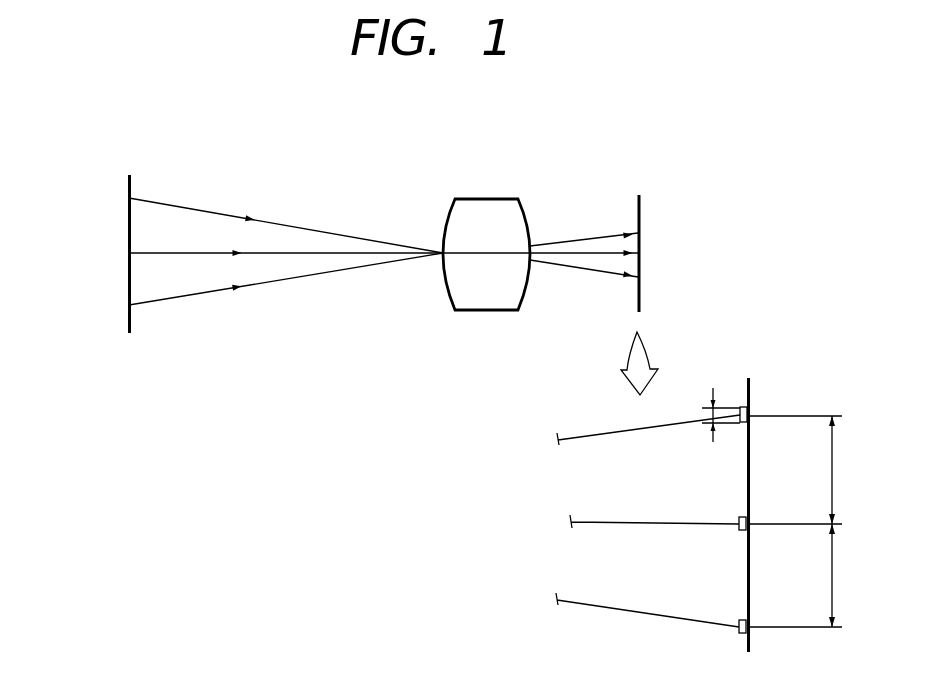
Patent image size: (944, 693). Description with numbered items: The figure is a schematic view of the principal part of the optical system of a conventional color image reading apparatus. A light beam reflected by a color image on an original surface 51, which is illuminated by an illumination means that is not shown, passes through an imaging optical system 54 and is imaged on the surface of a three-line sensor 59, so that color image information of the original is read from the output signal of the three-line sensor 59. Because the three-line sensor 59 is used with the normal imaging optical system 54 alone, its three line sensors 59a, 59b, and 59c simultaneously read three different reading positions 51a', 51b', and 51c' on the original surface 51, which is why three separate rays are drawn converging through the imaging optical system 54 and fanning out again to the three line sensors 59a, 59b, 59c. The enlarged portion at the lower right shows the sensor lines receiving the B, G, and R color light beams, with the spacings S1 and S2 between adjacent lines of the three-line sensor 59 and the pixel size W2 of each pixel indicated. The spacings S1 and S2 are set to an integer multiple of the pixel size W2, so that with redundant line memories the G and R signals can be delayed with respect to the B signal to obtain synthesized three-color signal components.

The original surface 51 is at (133, 187).
The reading position 51a' is at (243, 289).
The reading position 51b' is at (341, 241).
The reading position 51c' is at (243, 209).
The imaging optical system 54 is at (497, 199).
The 3-line sensor 59 is at (638, 208).
The line sensor 59a is at (641, 232).
The line sensor 59b is at (641, 255).
The line sensor 59c is at (641, 278).
The pixel size W2 is at (707, 420).
The B color light beam B is at (726, 412).
The G color light beam G is at (726, 508).
The R color light beam R is at (725, 606).
The spacing S1 is at (847, 470).
The spacing S2 is at (847, 575).